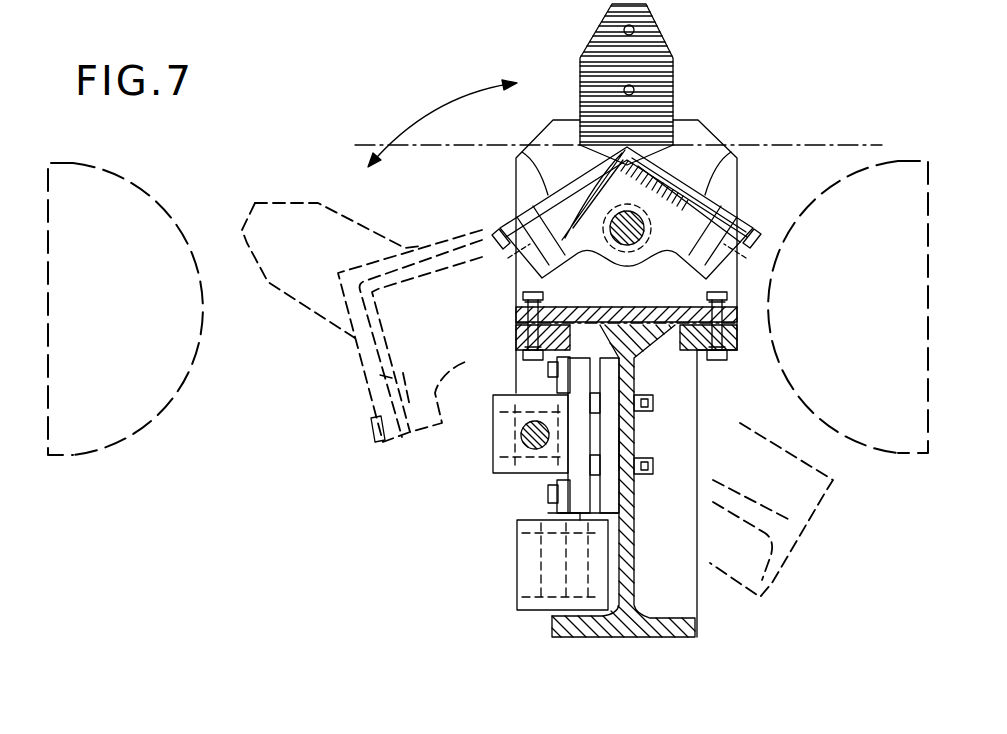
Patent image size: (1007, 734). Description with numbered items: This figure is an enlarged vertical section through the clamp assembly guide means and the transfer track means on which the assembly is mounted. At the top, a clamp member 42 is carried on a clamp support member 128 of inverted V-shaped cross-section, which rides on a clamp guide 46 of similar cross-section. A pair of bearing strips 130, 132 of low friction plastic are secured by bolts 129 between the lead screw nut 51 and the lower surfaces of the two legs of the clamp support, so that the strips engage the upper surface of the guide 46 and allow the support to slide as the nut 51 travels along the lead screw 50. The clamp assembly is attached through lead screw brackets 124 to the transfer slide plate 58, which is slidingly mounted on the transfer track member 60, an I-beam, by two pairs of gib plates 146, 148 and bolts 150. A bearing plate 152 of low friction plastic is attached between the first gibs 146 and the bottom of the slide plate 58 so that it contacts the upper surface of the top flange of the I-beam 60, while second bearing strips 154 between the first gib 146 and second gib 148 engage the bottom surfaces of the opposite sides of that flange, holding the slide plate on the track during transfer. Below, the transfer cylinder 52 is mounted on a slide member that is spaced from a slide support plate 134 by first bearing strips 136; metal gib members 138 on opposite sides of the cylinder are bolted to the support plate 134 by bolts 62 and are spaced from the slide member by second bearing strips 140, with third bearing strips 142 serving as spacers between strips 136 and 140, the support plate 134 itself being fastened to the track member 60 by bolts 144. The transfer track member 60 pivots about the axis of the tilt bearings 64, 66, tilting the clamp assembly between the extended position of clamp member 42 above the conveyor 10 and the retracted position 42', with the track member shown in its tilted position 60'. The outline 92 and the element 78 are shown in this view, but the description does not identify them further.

The conveyor 10 is at (375, 145).
The clamp member 42 is at (652, 84).
The retracted position of clamp member 42' is at (362, 290).
The clamp guide 46 is at (655, 190).
The lead screw 50 is at (630, 244).
The nut 51 is at (648, 250).
The transfer cylinder 52 is at (493, 460).
The transfer slide plate 58 is at (737, 310).
The transfer track member 60 is at (626, 490).
The tilted position of transfer track member 60' is at (776, 513).
The bolts 62 is at (550, 505).
The tilt bearing 64 is at (686, 450).
The tilt bearing 66 is at (640, 440).
The block 78 is at (520, 580).
The swing envelope 92 is at (148, 190).
The lead screw bracket 124 is at (540, 147).
The clamp support member 128 is at (522, 152).
The bolts 129 is at (502, 218).
The bearing strip 130 is at (530, 189).
The bearing strip 132 is at (718, 205).
The slide support plate 134 is at (605, 380).
The first bearing strip 136 is at (604, 360).
The gib member 138 is at (548, 378).
The second bearing strip 140 is at (572, 360).
The third bearing strip 142 is at (579, 362).
The bolts 144 is at (652, 405).
The first gib plate 146 is at (516, 325).
The second gib plate 148 is at (516, 345).
The bolts 150 is at (525, 355).
The bearing plate 152 is at (737, 330).
The second bearing strip 154 is at (516, 335).